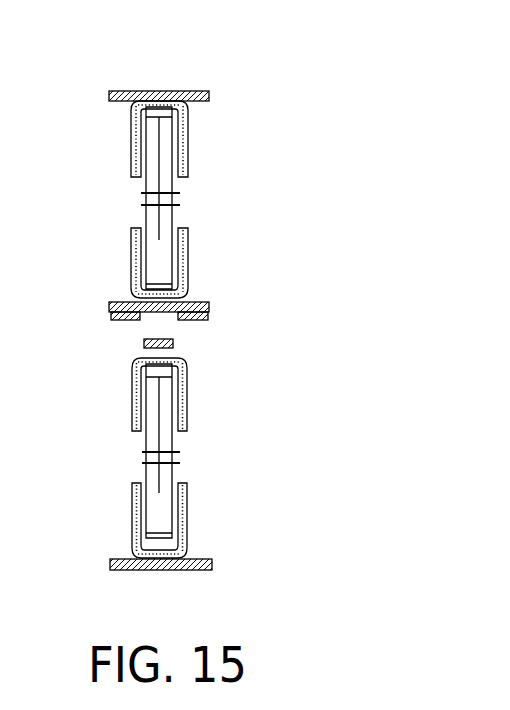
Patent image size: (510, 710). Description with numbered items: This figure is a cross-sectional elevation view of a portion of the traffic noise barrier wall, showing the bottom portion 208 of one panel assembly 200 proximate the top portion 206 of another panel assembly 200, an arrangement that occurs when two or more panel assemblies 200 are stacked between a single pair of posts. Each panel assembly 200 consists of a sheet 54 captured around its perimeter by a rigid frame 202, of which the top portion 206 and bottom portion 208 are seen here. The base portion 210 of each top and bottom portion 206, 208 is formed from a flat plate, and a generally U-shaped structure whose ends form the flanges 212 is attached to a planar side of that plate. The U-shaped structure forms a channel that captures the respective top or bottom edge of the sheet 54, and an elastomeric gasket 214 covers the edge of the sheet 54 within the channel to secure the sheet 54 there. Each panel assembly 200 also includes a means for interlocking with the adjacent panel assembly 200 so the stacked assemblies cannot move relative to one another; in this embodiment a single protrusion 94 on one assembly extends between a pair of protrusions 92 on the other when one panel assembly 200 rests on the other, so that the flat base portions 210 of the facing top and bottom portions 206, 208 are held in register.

The panel assembly 200 is at (233, 310).
The frame 202 is at (211, 310).
The top portion 206 is at (232, 124).
The bottom portion 208 is at (225, 284).
The base portion 210 is at (211, 96).
The flanges 212 is at (130, 152).
The elastomeric gasket 214 is at (176, 172).
The sheet 54 is at (182, 200).
The protrusions 92 is at (118, 317).
The protrusion 94 is at (175, 336).